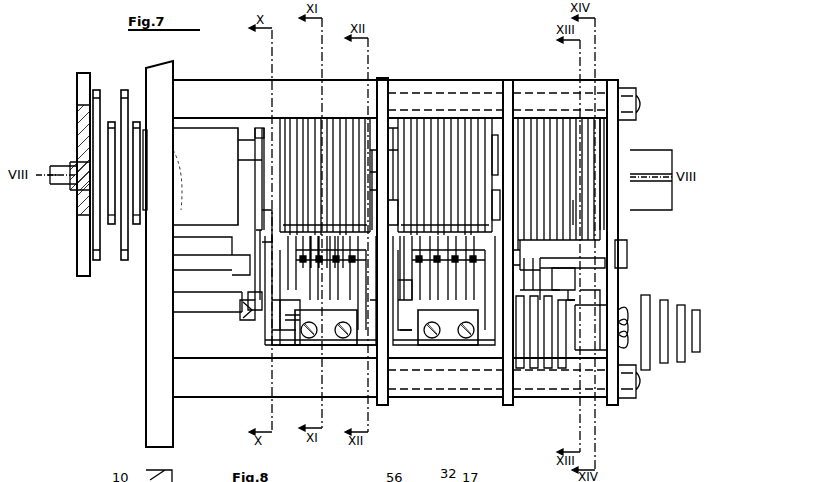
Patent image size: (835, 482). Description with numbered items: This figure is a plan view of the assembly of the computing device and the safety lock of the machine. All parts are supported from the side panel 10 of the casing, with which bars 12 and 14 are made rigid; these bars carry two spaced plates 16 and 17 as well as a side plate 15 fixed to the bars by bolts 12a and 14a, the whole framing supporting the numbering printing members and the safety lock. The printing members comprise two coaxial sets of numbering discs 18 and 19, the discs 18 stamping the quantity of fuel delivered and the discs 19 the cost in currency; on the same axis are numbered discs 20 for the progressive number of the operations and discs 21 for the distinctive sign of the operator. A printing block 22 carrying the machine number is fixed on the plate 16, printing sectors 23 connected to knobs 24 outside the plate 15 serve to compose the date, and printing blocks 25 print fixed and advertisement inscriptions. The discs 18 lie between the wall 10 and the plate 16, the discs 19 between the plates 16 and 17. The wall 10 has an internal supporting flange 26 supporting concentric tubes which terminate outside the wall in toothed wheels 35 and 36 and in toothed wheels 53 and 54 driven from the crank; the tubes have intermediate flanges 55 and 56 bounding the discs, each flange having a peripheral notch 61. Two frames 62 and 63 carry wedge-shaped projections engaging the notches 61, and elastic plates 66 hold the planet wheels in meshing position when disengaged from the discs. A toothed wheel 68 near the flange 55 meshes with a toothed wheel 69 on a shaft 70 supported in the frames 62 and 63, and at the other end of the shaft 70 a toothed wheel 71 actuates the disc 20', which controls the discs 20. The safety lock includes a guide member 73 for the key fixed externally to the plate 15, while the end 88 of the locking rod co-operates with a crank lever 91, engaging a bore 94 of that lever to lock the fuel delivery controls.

The side panel 10 is at (152, 336).
The bar 12 is at (230, 388).
The bolt 12a is at (444, 386).
The bar 14 is at (191, 93).
The bolt 14a is at (482, 100).
The side plate 15 is at (618, 288).
The plate 16 is at (386, 78).
The plate 17 is at (508, 80).
The numbering discs 18 is at (347, 118).
The numbering discs 19 is at (470, 118).
The numbered discs 20 is at (559, 151).
The disc 20' is at (628, 212).
The discs 21 is at (596, 118).
The printing block 22 is at (372, 150).
The printing sectors 23 is at (562, 370).
The knobs 24 is at (697, 355).
The printing blocks 25 is at (258, 332).
The supporting flange 26 is at (224, 140).
The toothed wheel 35 is at (98, 90).
The toothed wheel 36 is at (125, 90).
The toothed wheel 53 is at (112, 226).
The toothed wheel 54 is at (137, 226).
The flange 55 is at (262, 164).
The flange 56 is at (396, 128).
The peripheral notch 61 is at (272, 238).
The frame 62 is at (406, 400).
The frame 63 is at (282, 400).
The elastic plates 66 is at (300, 298).
The toothed wheel 68 is at (260, 128).
The toothed wheel 69 is at (255, 290).
The shaft 70 is at (214, 255).
The toothed wheel 71 is at (575, 280).
The guide member 73 is at (645, 150).
The end of rod 88 is at (74, 196).
The crank lever 91 is at (80, 100).
The bore 94 is at (78, 148).